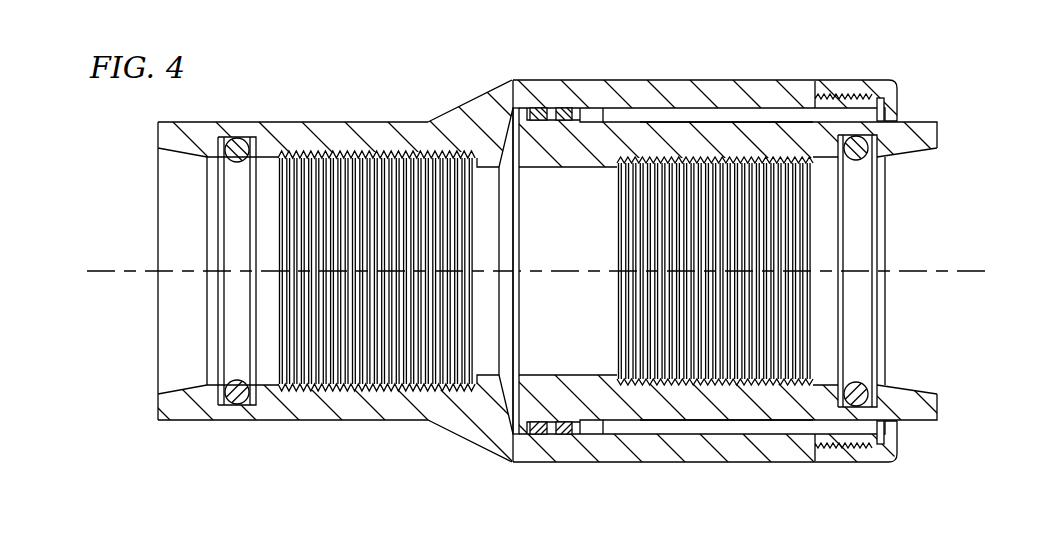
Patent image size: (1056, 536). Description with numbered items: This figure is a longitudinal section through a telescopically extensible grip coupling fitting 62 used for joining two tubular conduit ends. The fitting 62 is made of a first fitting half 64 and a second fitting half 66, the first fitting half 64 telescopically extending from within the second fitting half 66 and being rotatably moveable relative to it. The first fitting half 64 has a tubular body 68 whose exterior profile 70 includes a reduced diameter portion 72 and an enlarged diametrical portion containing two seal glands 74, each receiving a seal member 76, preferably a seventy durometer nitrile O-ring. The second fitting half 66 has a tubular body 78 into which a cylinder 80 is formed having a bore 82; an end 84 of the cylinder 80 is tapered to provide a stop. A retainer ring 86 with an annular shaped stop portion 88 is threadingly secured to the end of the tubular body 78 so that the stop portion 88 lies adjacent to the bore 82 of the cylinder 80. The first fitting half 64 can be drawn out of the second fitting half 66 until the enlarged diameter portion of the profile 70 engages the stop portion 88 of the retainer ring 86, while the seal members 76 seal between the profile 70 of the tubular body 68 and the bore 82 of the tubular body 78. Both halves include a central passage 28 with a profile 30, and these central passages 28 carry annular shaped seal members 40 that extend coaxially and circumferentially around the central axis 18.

The central axis 18 is at (112, 268).
The central passage 28 is at (280, 388).
The profile 30 is at (207, 158).
The annular shaped seal member 40 is at (238, 136).
The telescopically extensible grip coupling fitting 62 is at (478, 102).
The first fitting half 64 is at (918, 132).
The second fitting half 66 is at (374, 416).
The tubular body 68 is at (913, 418).
The exterior profile 70 is at (755, 422).
The reduced diameter portion 72 is at (663, 422).
The seal gland 74 is at (563, 435).
The seal member 76 is at (536, 435).
The tubular body 78 is at (672, 90).
The cylinder 80 is at (605, 109).
The bore 82 is at (605, 433).
The end of the cylinder 84 is at (516, 106).
The retainer ring 86 is at (890, 464).
The annular shaped stop portion 88 is at (890, 434).